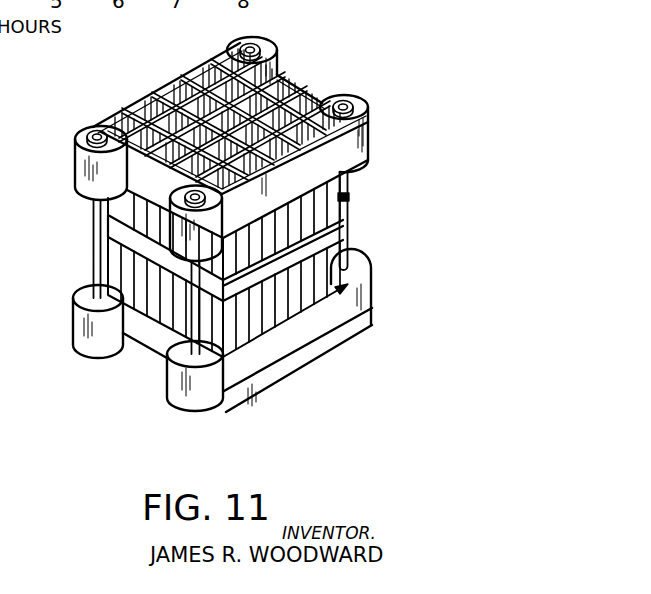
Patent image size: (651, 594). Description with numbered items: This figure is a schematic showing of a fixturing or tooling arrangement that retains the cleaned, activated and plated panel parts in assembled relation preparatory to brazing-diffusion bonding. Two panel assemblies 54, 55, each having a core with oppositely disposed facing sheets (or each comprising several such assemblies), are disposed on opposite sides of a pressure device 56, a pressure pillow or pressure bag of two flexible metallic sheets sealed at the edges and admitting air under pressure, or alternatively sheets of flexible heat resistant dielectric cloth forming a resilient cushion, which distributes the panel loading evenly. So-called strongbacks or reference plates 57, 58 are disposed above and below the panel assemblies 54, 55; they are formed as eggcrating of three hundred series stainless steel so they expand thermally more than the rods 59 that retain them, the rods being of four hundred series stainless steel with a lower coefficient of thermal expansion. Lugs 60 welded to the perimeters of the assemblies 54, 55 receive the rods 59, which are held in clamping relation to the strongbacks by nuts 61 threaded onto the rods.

The panel assembly 54 is at (353, 197).
The panel assembly 55 is at (370, 280).
The pressure device 56 is at (345, 227).
The reference plate 57 is at (336, 166).
The reference plate 58 is at (268, 366).
The rod 59 is at (92, 258).
The lug 60 is at (278, 56).
The nut 61 is at (276, 35).